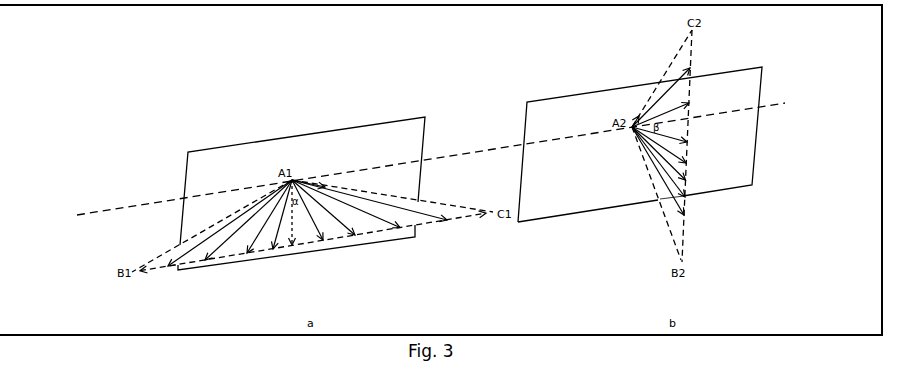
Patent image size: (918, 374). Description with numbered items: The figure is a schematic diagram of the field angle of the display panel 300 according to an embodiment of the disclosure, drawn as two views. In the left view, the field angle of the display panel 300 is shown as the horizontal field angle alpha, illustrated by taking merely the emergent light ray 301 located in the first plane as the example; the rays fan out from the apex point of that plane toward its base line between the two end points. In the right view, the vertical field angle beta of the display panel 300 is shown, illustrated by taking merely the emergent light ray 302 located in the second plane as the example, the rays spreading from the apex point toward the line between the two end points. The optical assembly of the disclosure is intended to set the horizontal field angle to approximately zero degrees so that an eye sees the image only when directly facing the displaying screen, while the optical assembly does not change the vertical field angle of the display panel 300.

The display panel 300 is at (353, 126).
The emergent light ray 301 is at (373, 215).
The emergent light ray 302 is at (672, 195).